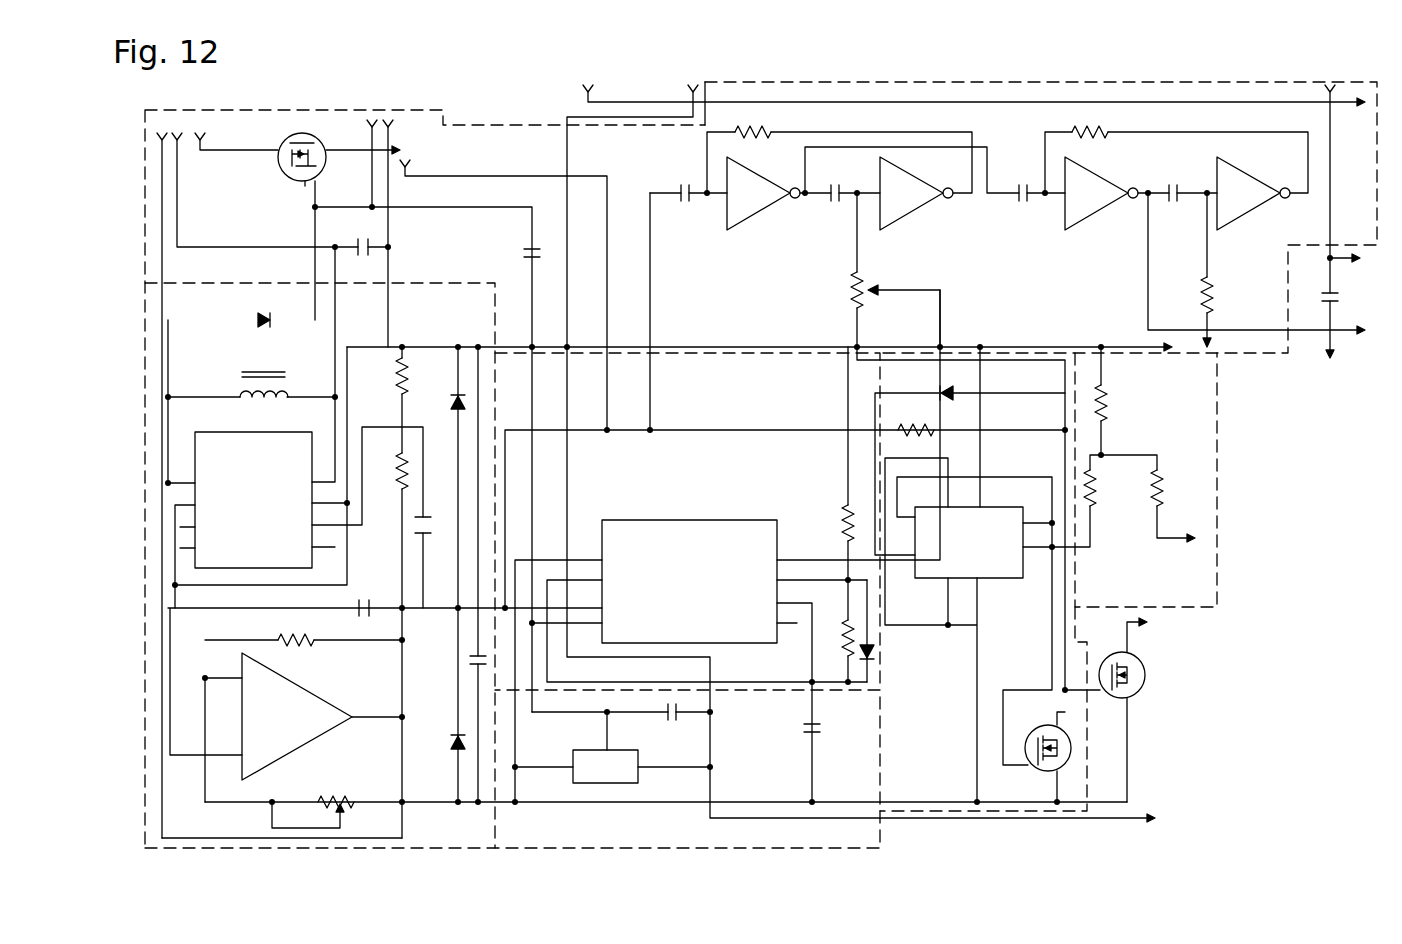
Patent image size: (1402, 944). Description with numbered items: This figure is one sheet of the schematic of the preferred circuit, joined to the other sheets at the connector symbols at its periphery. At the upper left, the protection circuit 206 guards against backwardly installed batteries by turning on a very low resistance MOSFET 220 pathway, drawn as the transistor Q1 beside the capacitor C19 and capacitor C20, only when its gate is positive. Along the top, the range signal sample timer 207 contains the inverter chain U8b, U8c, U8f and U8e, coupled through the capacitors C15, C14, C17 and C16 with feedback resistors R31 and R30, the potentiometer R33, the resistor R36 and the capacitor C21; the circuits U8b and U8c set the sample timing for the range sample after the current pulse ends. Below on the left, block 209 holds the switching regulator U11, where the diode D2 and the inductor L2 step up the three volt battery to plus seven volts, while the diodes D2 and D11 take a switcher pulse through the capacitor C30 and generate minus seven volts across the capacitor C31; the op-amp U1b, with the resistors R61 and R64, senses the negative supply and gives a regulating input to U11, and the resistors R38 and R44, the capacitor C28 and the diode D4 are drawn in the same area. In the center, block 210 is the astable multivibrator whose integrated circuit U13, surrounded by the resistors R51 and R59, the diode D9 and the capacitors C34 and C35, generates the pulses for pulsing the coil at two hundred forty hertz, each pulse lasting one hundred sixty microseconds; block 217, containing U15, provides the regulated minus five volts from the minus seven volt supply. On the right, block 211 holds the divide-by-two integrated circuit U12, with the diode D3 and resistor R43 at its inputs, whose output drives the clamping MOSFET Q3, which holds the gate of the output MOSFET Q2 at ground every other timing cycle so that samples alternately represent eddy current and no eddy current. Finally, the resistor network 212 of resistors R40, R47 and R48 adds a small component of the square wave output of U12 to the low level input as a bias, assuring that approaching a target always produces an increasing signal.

The protection circuit 206 is at (145, 203).
The range signal sample timer 207 is at (897, 80).
The switching regulator block 209 is at (145, 490).
The astable multivibrator 210 is at (753, 693).
The divide-by-two flip-flop block 211 is at (1087, 760).
The resistor network 212 is at (1217, 456).
The regulated minus five volt supply 217 is at (560, 842).
The MOSFET 220 is at (292, 181).
The transistor Q1 is at (282, 158).
The output MOSFET Q2 is at (1140, 675).
The clamping MOSFET Q3 is at (1039, 762).
The capacitor C14 is at (830, 207).
The capacitor C15 is at (680, 207).
The capacitor C16 is at (1172, 207).
The capacitor C17 is at (1018, 207).
The capacitor C19 is at (357, 234).
The capacitor C20 is at (526, 246).
The capacitor C21 is at (1342, 298).
The capacitor C28 is at (432, 543).
The capacitor C30 is at (368, 594).
The capacitor C31 is at (488, 659).
The capacitor C34 is at (669, 719).
The capacitor C35 is at (827, 732).
The diode D2 is at (264, 308).
The diode D3 is at (947, 383).
The diode D4 is at (445, 404).
The diode D9 is at (885, 655).
The diode D11 is at (445, 737).
The inductor L2 is at (264, 370).
The resistor R30 is at (1090, 121).
The resistor R31 is at (753, 121).
The potentiometer R33 is at (835, 290).
The resistor R36 is at (1231, 295).
The resistor R38 is at (390, 376).
The resistor R40 is at (1113, 403).
The resistor R43 is at (916, 418).
The resistor R44 is at (390, 471).
The resistor R47 is at (1102, 490).
The resistor R48 is at (1169, 490).
The resistor R51 is at (836, 523).
The resistor R59 is at (836, 638).
The resistor R61 is at (294, 630).
The potentiometer R64 is at (337, 792).
The op-amp U1b is at (294, 716).
The circuit U8b is at (763, 193).
The circuit U8c is at (912, 193).
The inverter U8e is at (1250, 193).
The inverter U8f is at (1094, 193).
The switching regulator U11 is at (253, 500).
The integrated circuit U12 is at (968, 544).
The integrated circuit U13 is at (689, 581).
The voltage reference U15 is at (622, 765).